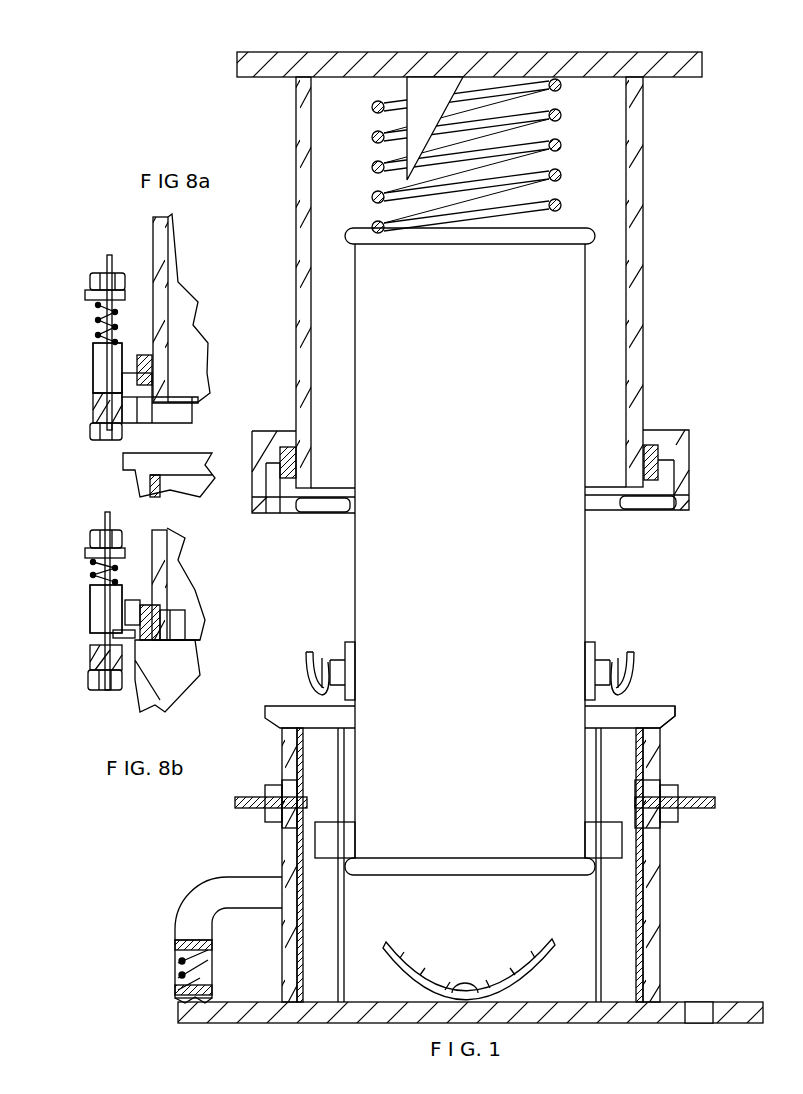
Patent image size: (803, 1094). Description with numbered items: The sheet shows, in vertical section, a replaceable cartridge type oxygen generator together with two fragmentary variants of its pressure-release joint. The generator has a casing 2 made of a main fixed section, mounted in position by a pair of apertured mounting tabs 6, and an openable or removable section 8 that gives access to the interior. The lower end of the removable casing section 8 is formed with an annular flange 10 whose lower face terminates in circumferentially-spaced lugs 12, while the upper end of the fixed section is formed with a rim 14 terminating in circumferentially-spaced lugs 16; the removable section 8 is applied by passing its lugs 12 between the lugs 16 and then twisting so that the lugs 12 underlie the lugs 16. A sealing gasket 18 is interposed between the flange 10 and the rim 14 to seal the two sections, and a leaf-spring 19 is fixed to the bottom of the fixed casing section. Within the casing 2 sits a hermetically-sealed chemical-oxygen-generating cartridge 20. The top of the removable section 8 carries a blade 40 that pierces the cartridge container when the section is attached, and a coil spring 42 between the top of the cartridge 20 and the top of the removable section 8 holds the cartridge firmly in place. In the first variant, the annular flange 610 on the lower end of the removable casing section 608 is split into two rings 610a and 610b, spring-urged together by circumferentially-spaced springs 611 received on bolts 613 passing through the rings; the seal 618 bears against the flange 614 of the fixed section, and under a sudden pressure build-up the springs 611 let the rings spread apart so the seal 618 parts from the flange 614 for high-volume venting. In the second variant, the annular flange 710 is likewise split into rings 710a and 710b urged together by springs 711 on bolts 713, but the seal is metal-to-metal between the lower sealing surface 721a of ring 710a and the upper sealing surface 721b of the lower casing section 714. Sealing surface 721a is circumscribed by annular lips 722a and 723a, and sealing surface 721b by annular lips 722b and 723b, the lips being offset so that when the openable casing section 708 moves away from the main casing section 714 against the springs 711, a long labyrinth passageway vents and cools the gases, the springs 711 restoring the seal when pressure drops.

In FIG. 1, the casing 2 is at (305, 70).
In FIG. 1, the blade 40 is at (418, 88).
In FIG. 1, the coil spring 42 is at (508, 90).
In FIG. 1, the removable casing section 8 is at (637, 195).
In FIG. 1, the annular flange 10 is at (657, 435).
In FIG. 1, the sealing gasket 18 is at (655, 463).
In FIG. 1, the lugs 12 is at (640, 505).
In FIG. 1, the chemical-oxygen-generating cartridge 20 is at (385, 548).
In FIG. 1, the rim 14 is at (655, 705).
In FIG. 1, the lugs 16 is at (672, 713).
In FIG. 1, the mounting tabs 6 is at (732, 1000).
In FIG. 1, the leaf-spring 19 is at (415, 985).
In FIG. 8a, the removable casing section 608 is at (155, 240).
In FIG. 8a, the bolts 613 is at (100, 312).
In FIG. 8a, the springs 611 is at (96, 322).
In FIG. 8a, the annular flange 610 is at (120, 350).
In FIG. 8a, the ring 610a is at (93, 380).
In FIG. 8a, the ring 610b is at (93, 420).
In FIG. 8a, the seal 618 is at (150, 358).
In FIG. 8a, the flange 614 is at (128, 460).
In FIG. 8b, the openable casing section 708 is at (155, 548).
In FIG. 8b, the bolts 713 is at (92, 572).
In FIG. 8b, the springs 711 is at (92, 578).
In FIG. 8b, the annular flange 710 is at (118, 610).
In FIG. 8b, the ring 710a is at (90, 610).
In FIG. 8b, the ring 710b is at (90, 660).
In FIG. 8b, the annular lip 723a is at (150, 600).
In FIG. 8b, the annular lip 723b is at (113, 633).
In FIG. 8b, the sealing surface 721a is at (165, 610).
In FIG. 8b, the sealing surface 721b is at (178, 665).
In FIG. 8b, the annular lip 722a is at (160, 625).
In FIG. 8b, the annular lip 722b is at (178, 640).
In FIG. 8b, the lower casing section 714 is at (140, 708).